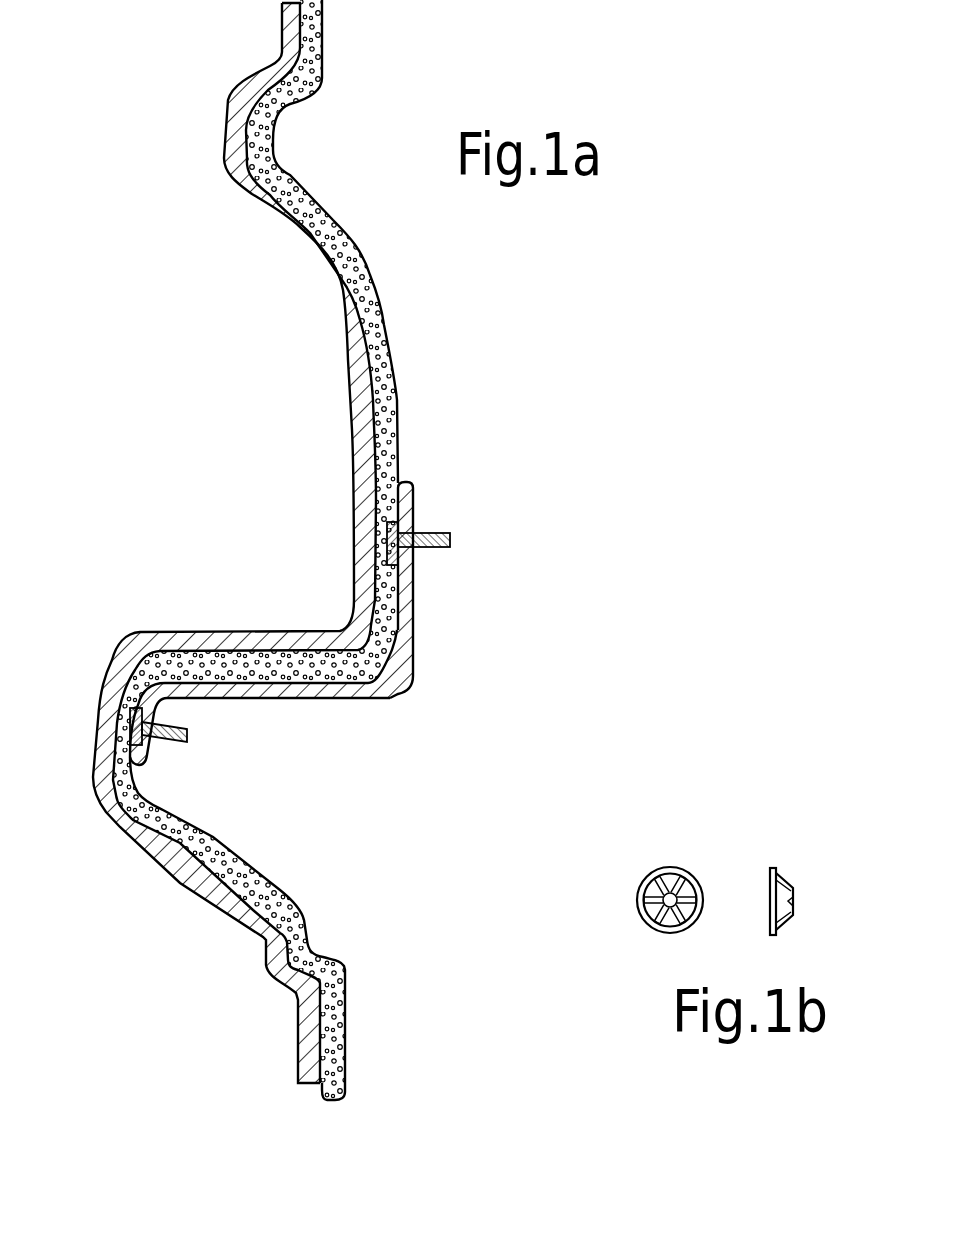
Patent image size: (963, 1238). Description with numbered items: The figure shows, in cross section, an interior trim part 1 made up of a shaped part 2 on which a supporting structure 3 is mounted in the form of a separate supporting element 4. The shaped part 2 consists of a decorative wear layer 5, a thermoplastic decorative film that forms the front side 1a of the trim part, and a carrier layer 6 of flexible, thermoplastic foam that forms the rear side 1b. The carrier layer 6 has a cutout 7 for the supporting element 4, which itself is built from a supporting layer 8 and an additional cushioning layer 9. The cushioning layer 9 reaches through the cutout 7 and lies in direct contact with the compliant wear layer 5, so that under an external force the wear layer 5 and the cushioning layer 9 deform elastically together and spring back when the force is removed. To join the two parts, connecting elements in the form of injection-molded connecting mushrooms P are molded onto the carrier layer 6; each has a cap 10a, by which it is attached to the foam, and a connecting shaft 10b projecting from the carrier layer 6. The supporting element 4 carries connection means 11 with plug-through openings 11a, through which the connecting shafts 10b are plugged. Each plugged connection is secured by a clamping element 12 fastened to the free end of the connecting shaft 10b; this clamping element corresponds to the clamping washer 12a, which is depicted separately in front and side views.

In FIG. 1a, the interior trim part 1 is at (95, 112).
In FIG. 1a, the front side 1a is at (118, 382).
In FIG. 1a, the rear side 1b is at (534, 378).
In FIG. 1a, the shaped part 2 is at (213, 907).
In FIG. 1a, the supporting structure 3 is at (300, 631).
In FIG. 1a, the supporting element 4 is at (369, 711).
In FIG. 1a, the decorative wear layer 5 is at (183, 632).
In FIG. 1a, the carrier layer 6 is at (380, 355).
In FIG. 1a, the cutout 7 is at (300, 612).
In FIG. 1a, the supporting layer 8 is at (400, 612).
In FIG. 1a, the cushioning layer 9 is at (290, 670).
In FIG. 1a, the cap 10a is at (387, 533).
In FIG. 1a, the connecting shaft 10b is at (443, 533).
In FIG. 1a, the connection means 11 is at (287, 607).
In FIG. 1a, the plug-through opening 11a is at (413, 530).
In FIG. 1a, the connecting mushroom P is at (462, 548).
In FIG. 1b, the clamping element 12 is at (708, 858).
In FIG. 1b, the clamping washer 12a is at (643, 913).